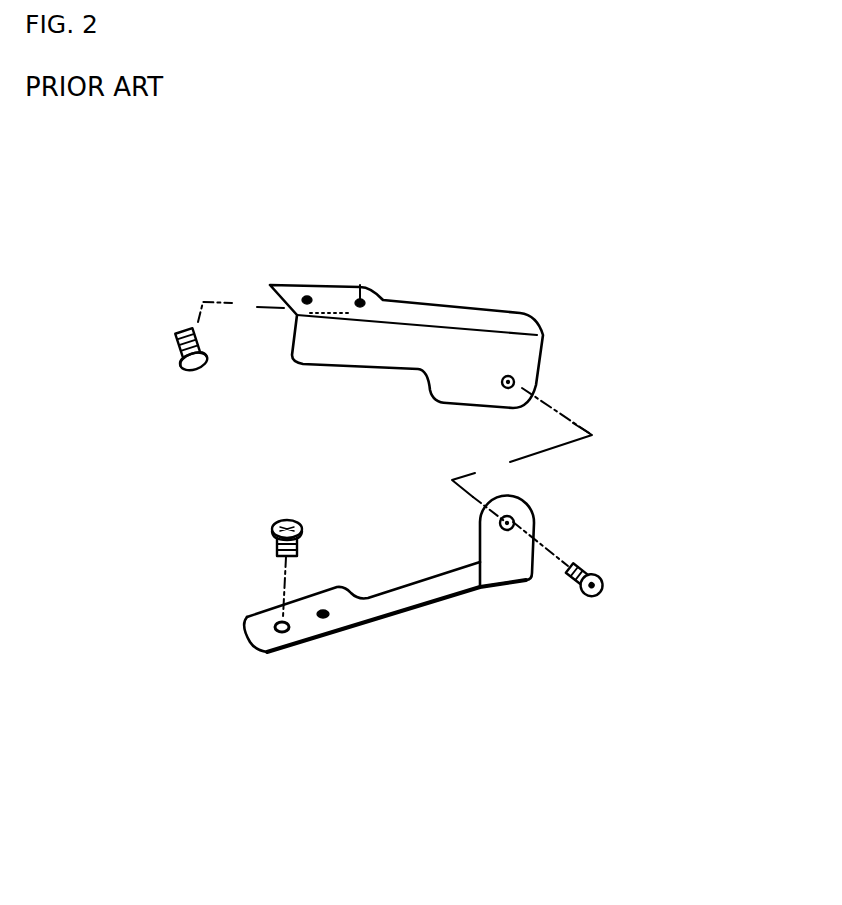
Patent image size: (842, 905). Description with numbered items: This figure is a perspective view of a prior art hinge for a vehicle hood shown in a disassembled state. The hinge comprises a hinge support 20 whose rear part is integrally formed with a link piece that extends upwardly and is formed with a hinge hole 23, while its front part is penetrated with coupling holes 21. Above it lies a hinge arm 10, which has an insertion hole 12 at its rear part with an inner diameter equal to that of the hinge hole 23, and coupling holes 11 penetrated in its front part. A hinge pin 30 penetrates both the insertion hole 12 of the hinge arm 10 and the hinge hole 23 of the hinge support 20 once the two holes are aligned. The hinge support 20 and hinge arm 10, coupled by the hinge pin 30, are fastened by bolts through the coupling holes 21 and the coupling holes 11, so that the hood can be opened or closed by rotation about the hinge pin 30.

The hinge arm 10 is at (462, 310).
The coupling holes 11 is at (300, 297).
The insertion hole 12 is at (520, 382).
The hinge support 20 is at (430, 597).
The coupling holes 21 is at (323, 620).
The hinge hole 23 is at (514, 520).
The hinge pin 30 is at (603, 592).